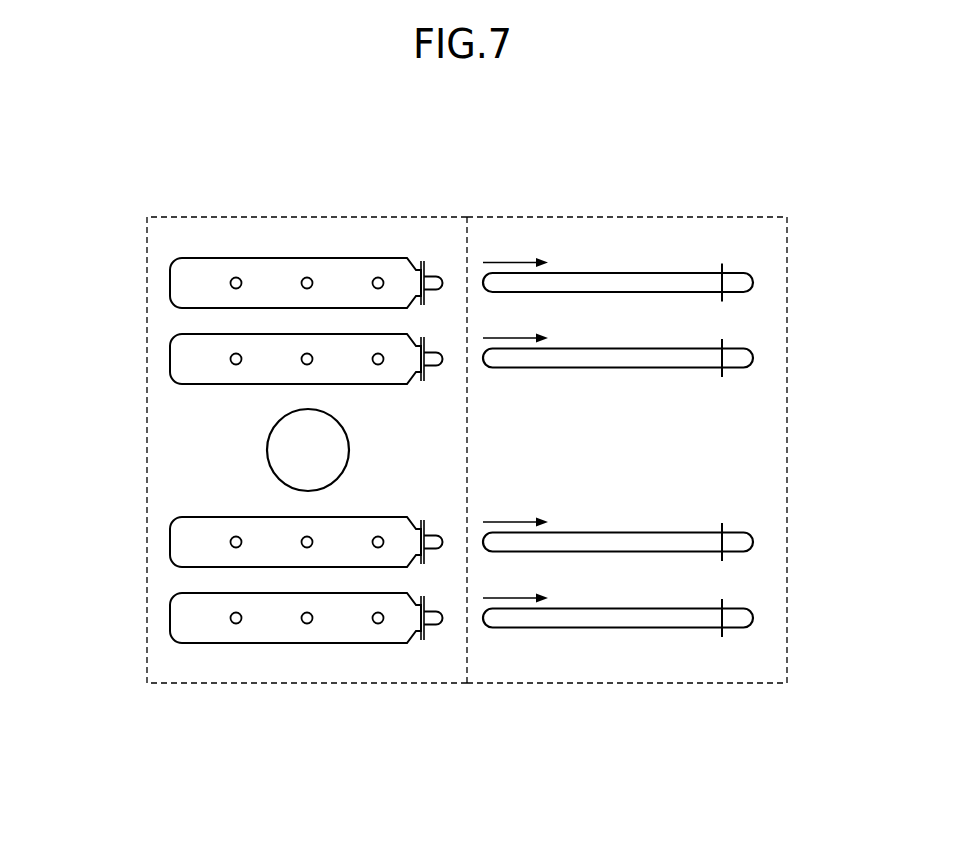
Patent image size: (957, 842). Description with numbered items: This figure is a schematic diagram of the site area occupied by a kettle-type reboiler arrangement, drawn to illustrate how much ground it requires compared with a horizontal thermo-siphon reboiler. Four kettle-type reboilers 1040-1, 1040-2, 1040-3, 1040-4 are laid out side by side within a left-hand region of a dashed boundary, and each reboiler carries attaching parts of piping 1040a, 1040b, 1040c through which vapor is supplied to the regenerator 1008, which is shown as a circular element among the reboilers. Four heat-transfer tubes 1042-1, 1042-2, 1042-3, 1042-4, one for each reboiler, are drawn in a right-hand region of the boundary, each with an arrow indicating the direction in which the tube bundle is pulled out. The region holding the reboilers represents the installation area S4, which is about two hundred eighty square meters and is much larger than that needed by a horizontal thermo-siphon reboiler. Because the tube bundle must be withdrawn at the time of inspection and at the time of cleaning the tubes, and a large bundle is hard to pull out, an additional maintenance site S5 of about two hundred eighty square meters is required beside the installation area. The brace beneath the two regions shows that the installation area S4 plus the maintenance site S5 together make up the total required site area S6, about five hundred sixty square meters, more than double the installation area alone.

The kettle-type reboiler 1040-1 is at (208, 258).
The kettle-type reboiler 1040-2 is at (170, 357).
The kettle-type reboiler 1040-3 is at (170, 540).
The kettle-type reboiler 1040-4 is at (170, 617).
The attaching part of piping 1040a is at (236, 277).
The attaching part of piping 1040b is at (307, 277).
The attaching part of piping 1040c is at (378, 277).
The regenerator 1008 is at (267, 451).
The heat-transfer tube 1042-1 is at (594, 279).
The heat-transfer tube 1042-2 is at (710, 353).
The heat-transfer tube 1042-3 is at (710, 536).
The heat-transfer tube 1042-4 is at (710, 612).
The installation area S4 is at (363, 683).
The maintenance site area S5 is at (568, 683).
The total required site area S6 is at (467, 505).